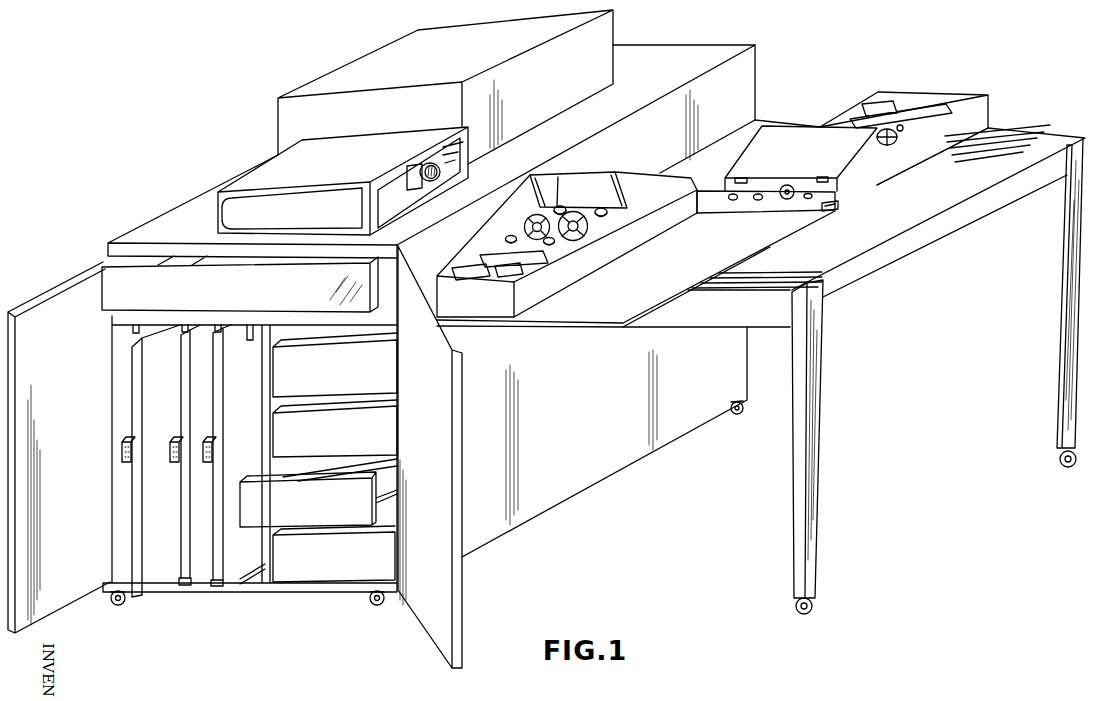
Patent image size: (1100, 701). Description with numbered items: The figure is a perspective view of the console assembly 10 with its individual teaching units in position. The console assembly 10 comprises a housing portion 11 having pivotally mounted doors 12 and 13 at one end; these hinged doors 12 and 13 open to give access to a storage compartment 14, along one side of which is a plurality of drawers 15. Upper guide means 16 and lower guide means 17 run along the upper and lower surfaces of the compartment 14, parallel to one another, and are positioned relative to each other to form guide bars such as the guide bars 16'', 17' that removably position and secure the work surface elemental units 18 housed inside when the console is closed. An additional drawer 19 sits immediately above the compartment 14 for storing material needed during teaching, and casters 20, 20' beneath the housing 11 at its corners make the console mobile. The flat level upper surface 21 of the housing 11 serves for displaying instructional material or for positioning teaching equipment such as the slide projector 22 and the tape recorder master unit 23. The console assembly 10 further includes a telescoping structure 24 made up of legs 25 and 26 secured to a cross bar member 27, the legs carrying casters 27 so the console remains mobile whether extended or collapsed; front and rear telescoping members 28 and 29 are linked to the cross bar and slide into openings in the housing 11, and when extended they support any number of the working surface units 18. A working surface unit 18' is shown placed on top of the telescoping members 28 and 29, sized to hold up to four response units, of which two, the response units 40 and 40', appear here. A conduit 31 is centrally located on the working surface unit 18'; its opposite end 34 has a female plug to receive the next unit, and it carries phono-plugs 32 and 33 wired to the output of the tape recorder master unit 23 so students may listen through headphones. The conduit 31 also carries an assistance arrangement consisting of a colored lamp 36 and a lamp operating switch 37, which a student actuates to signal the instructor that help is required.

The console assembly 10 is at (624, 547).
The housing portion 11 is at (632, 18).
The pivotally mounted door 12 is at (48, 300).
The pivotally mounted door 13 is at (409, 485).
The storage compartment 14 is at (155, 576).
The drawers 15 is at (324, 381).
The upper guide means 16 is at (177, 307).
The guide bar 16'' is at (242, 348).
The lower guide means 17 is at (191, 602).
The guide bar 17' is at (238, 595).
The work surface elemental units 18 is at (185, 461).
The working surface unit 18' is at (637, 277).
The additional drawer 19 is at (241, 297).
The casters 20 is at (422, 514).
The caster 20' is at (361, 609).
The flat level upper surface 21 is at (170, 216).
The slide projector 22 is at (311, 167).
The tape recorder master unit 23 is at (348, 72).
The telescoping structure 24 is at (941, 291).
The leg 25 is at (810, 528).
The leg 26 is at (1057, 346).
The cross bar member / casters 27 is at (958, 237).
The front telescoping member 28 is at (773, 287).
The rear telescoping member 29 is at (1010, 155).
The conduit 31 is at (708, 193).
The phono-plug / female plug 32 is at (735, 200).
The phono-plug / side wall 33 is at (585, 398).
The opposite end of conduit 34 is at (830, 210).
The colored lamp 36 is at (788, 186).
The lamp operating switch 37 is at (809, 194).
The response unit 40 is at (567, 244).
The response unit 40' is at (923, 128).